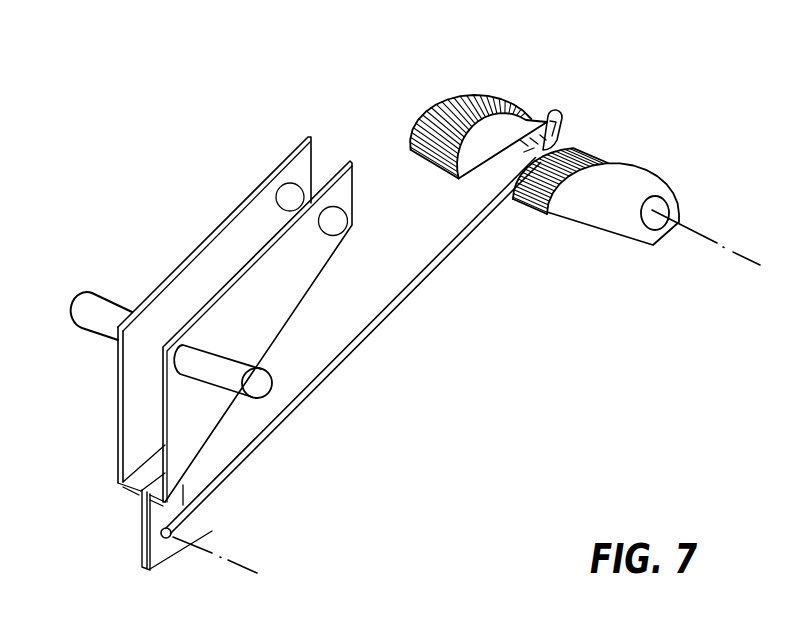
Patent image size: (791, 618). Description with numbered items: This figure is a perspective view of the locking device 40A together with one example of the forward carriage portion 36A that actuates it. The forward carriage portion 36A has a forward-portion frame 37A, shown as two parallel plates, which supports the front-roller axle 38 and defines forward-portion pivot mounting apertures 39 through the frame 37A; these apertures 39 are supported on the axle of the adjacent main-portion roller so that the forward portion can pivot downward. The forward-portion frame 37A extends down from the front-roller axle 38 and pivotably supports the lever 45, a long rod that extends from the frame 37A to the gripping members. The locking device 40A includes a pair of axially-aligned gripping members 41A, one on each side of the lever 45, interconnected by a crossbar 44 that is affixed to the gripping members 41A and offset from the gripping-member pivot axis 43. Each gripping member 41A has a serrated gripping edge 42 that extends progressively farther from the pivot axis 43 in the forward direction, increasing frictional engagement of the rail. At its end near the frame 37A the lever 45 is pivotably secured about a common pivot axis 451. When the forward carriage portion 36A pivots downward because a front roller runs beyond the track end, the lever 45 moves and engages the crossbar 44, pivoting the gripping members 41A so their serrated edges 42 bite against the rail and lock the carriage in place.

The locking device 40A is at (293, 103).
The forward carriage portion 36A is at (257, 277).
The forward-portion frame 37A is at (133, 405).
The front-roller axle 38 is at (257, 383).
The forward-portion pivot mounting apertures 39 is at (333, 220).
The gripping member 41A is at (600, 208).
The serrated gripping edge 42 is at (605, 152).
The gripping-member pivot axis 43 is at (695, 228).
The crossbar 44 is at (543, 123).
The lever 45 is at (360, 340).
The common pivot axis 451 is at (243, 563).